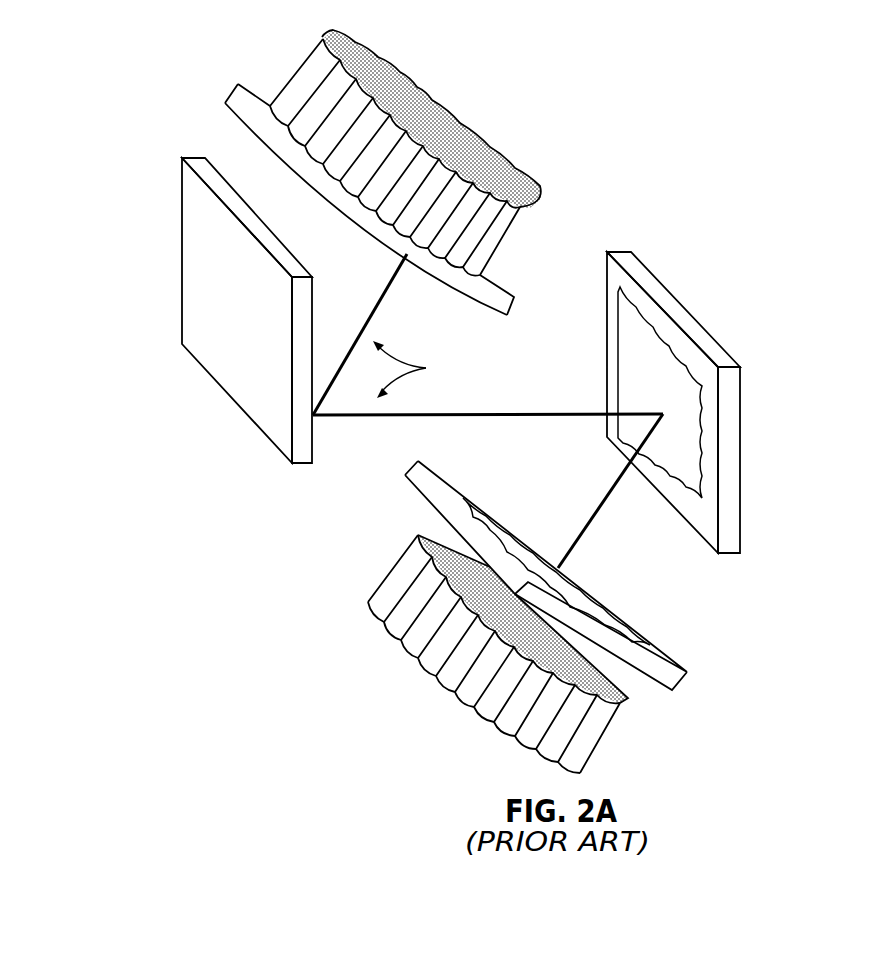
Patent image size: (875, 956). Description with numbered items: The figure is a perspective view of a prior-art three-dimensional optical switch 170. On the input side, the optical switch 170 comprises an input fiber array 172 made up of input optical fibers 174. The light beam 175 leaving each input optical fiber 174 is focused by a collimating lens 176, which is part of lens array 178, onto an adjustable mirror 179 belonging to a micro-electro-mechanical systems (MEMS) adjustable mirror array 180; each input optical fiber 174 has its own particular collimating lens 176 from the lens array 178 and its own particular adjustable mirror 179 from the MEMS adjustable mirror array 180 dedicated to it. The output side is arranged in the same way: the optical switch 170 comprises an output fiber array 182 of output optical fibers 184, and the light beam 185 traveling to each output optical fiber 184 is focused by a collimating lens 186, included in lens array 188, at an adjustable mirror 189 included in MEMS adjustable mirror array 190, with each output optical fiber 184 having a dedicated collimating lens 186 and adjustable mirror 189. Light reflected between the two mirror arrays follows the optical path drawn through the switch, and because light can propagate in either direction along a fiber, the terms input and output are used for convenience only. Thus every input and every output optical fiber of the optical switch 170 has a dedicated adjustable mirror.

The 3-dimensional optical switch 170 is at (722, 82).
The input fiber array 172 is at (502, 113).
The input optical fiber 174 is at (461, 205).
The light beam 175 is at (357, 338).
The collimating lens 176 is at (401, 257).
The lens array 178 is at (222, 88).
The adjustable mirror 179 is at (316, 418).
The MEMS adjustable mirror array 180 is at (247, 438).
The output fiber array 182 is at (386, 664).
The output optical fiber 184 is at (488, 714).
The light beam 185 is at (608, 489).
The collimating lens 186 is at (562, 566).
The lens array 188 is at (706, 644).
The adjustable mirror 189 is at (665, 416).
The MEMS adjustable mirror array 190 is at (754, 348).